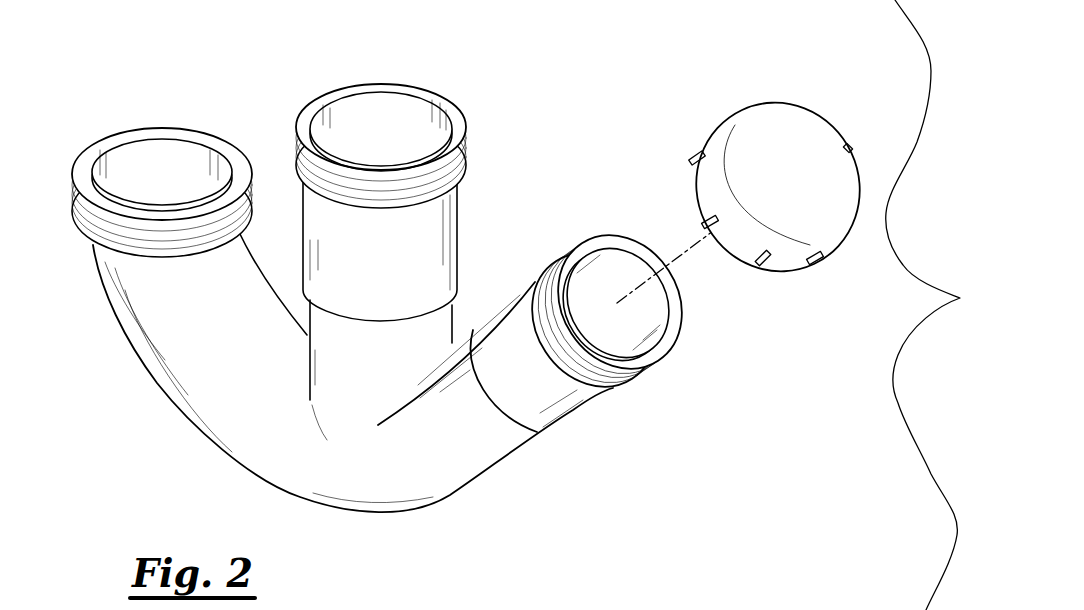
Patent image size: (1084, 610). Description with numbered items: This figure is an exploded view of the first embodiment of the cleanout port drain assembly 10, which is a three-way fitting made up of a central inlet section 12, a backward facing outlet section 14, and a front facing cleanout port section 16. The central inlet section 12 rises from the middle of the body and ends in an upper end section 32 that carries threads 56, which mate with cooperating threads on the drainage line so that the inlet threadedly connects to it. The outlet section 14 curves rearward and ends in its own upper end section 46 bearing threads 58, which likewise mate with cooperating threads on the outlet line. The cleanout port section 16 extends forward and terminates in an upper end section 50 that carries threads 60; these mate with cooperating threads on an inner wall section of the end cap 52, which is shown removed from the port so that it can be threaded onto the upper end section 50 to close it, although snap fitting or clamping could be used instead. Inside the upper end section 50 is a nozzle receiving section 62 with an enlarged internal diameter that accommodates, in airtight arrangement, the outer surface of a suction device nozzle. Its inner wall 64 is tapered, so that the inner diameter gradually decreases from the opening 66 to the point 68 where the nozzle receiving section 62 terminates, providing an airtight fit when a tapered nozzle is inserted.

The cleanout port drain assembly 10 is at (415, 479).
The central inlet section 12 is at (438, 245).
The backward facing outlet section 14 is at (178, 332).
The front facing cleanout port section 16 is at (473, 425).
The upper end section 32 is at (452, 205).
The upper end section 46 is at (113, 262).
The upper end section 50 is at (624, 361).
The end cap 52 is at (773, 122).
The threads 56 is at (420, 146).
The threads 58 is at (102, 223).
The threads 60 is at (615, 387).
The nozzle receiving section 62 is at (533, 413).
The inner wall 64 is at (602, 256).
The opening 66 is at (633, 320).
The point 68 is at (553, 385).